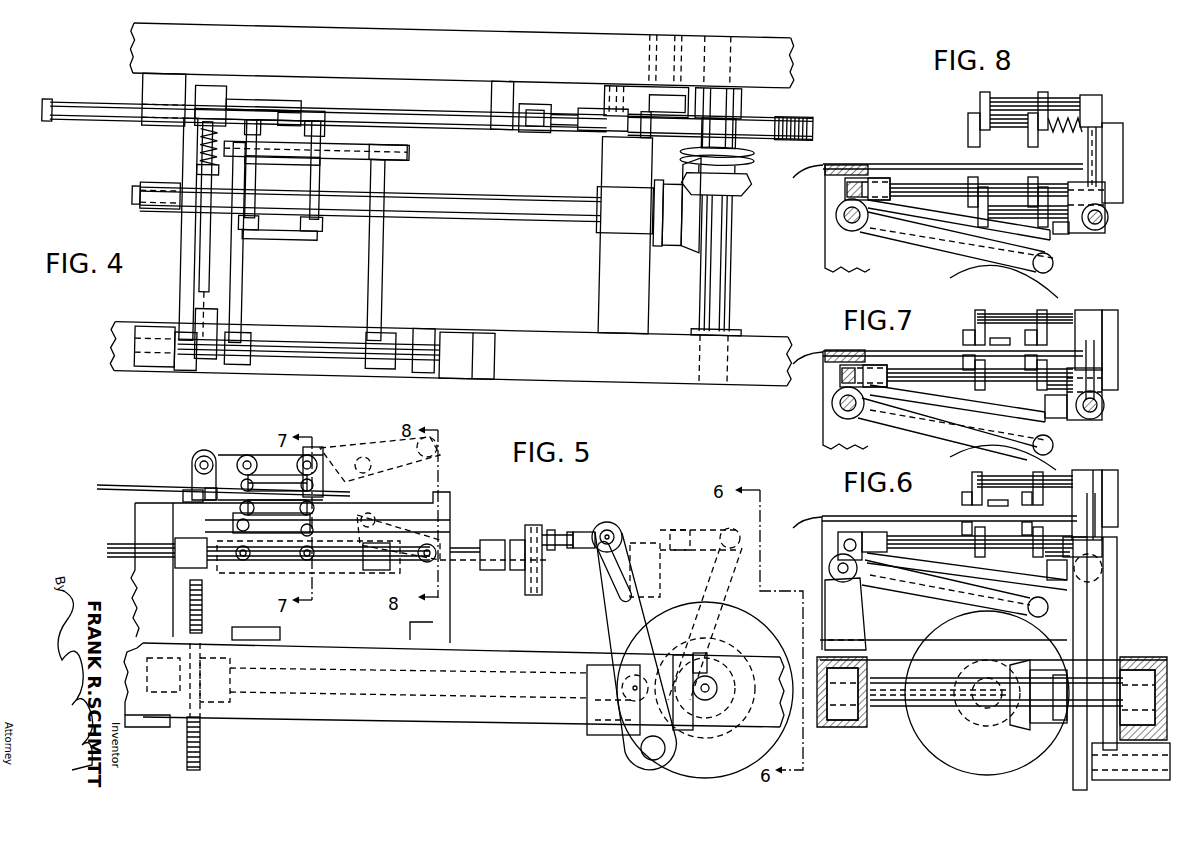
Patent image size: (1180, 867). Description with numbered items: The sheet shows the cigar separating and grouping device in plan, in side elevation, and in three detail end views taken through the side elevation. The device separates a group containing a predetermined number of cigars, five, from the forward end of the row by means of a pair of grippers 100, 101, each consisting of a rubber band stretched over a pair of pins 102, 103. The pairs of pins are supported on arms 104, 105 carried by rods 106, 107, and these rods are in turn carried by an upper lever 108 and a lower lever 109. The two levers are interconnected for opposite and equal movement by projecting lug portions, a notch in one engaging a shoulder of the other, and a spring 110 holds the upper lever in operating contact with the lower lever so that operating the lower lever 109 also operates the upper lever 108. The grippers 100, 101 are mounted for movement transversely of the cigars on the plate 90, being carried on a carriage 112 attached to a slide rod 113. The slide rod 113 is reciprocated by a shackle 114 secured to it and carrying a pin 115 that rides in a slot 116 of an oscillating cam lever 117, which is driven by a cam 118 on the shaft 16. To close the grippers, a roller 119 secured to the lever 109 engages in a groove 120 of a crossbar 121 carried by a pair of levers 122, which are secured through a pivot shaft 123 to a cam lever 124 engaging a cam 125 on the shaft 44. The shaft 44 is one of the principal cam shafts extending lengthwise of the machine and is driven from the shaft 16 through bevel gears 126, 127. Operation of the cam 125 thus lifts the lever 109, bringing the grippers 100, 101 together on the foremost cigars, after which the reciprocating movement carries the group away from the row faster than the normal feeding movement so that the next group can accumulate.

In FIG. 4, the shaft 16 is at (734, 203).
In FIG. 6, the shaft 16 is at (897, 707).
In FIG. 5, the shaft 16 is at (713, 683).
In FIG. 4, the shaft 44 is at (565, 212).
In FIG. 5, the shaft 44 is at (523, 700).
In FIG. 8, the plate 90 is at (910, 163).
In FIG. 7, the plate 90 is at (900, 350).
In FIG. 6, the plate 90 is at (850, 515).
In FIG. 4, the gripper 100 is at (282, 179).
In FIG. 8, the gripper 100 is at (1030, 137).
In FIG. 7, the gripper 100 is at (1023, 333).
In FIG. 6, the gripper 100 is at (1023, 498).
In FIG. 5, the gripper 100 is at (283, 485).
In FIG. 8, the gripper 101 is at (1028, 183).
In FIG. 7, the gripper 101 is at (1023, 363).
In FIG. 6, the gripper 101 is at (1020, 523).
In FIG. 5, the gripper 101 is at (262, 520).
In FIG. 5, the pins 102 is at (290, 487).
In FIG. 5, the pins 103 is at (242, 552).
In FIG. 5, the arm 104 is at (300, 500).
In FIG. 5, the arm 105 is at (300, 560).
In FIG. 4, the rod 106 is at (266, 194).
In FIG. 8, the rod 106 is at (1018, 113).
In FIG. 7, the rod 106 is at (1050, 323).
In FIG. 6, the rod 106 is at (1047, 487).
In FIG. 7, the rod 107 is at (1052, 382).
In FIG. 6, the rod 107 is at (1053, 543).
In FIG. 4, the upper lever 108 is at (205, 115).
In FIG. 8, the upper lever 108 is at (1100, 158).
In FIG. 7, the upper lever 108 is at (1100, 340).
In FIG. 6, the upper lever 108 is at (1102, 505).
In FIG. 5, the upper lever 108 is at (210, 497).
In FIG. 8, the lower lever 109 is at (1102, 173).
In FIG. 7, the lower lever 109 is at (1102, 360).
In FIG. 6, the lower lever 109 is at (1098, 527).
In FIG. 5, the lower lever 109 is at (200, 500).
In FIG. 4, the spring 110 is at (203, 145).
In FIG. 5, the spring 110 is at (200, 457).
In FIG. 4, the carriage 112 is at (240, 98).
In FIG. 8, the carriage 112 is at (1110, 207).
In FIG. 7, the carriage 112 is at (1108, 397).
In FIG. 6, the carriage 112 is at (1122, 480).
In FIG. 5, the carriage 112 is at (190, 498).
In FIG. 4, the slide rod 113 is at (472, 119).
In FIG. 8, the slide rod 113 is at (1097, 227).
In FIG. 7, the slide rod 113 is at (1092, 417).
In FIG. 6, the slide rod 113 is at (1088, 568).
In FIG. 5, the slide rod 113 is at (122, 540).
In FIG. 5, the shackle 114 is at (558, 532).
In FIG. 5, the pin 115 is at (613, 528).
In FIG. 5, the slot 116 is at (607, 575).
In FIG. 5, the oscillating cam lever 117 is at (600, 605).
In FIG. 4, the cam 118 is at (747, 106).
In FIG. 5, the cam 118 is at (633, 677).
In FIG. 8, the roller 119 is at (1067, 235).
In FIG. 7, the roller 119 is at (1057, 417).
In FIG. 6, the roller 119 is at (1046, 605).
In FIG. 5, the roller 119 is at (247, 558).
In FIG. 4, the groove 120 is at (350, 143).
In FIG. 4, the crossbar 121 is at (396, 154).
In FIG. 4, the levers 122 is at (389, 291).
In FIG. 8, the levers 122 is at (975, 223).
In FIG. 7, the levers 122 is at (977, 407).
In FIG. 6, the levers 122 is at (977, 570).
In FIG. 8, the pivot shaft 123 is at (865, 230).
In FIG. 7, the pivot shaft 123 is at (843, 405).
In FIG. 6, the pivot shaft 123 is at (843, 568).
In FIG. 5, the pivot shaft 123 is at (412, 567).
In FIG. 4, the cam lever 124 is at (190, 242).
In FIG. 8, the cam lever 124 is at (940, 248).
In FIG. 7, the cam lever 124 is at (900, 428).
In FIG. 6, the cam lever 124 is at (950, 603).
In FIG. 5, the cam lever 124 is at (200, 607).
In FIG. 4, the cam 125 is at (206, 270).
In FIG. 8, the cam 125 is at (1053, 270).
In FIG. 7, the cam 125 is at (1053, 453).
In FIG. 6, the cam 125 is at (923, 760).
In FIG. 5, the cam 125 is at (200, 728).
In FIG. 4, the bevel gear 126 is at (749, 174).
In FIG. 6, the bevel gear 126 is at (968, 723).
In FIG. 4, the bevel gear 127 is at (698, 225).
In FIG. 6, the bevel gear 127 is at (1017, 723).